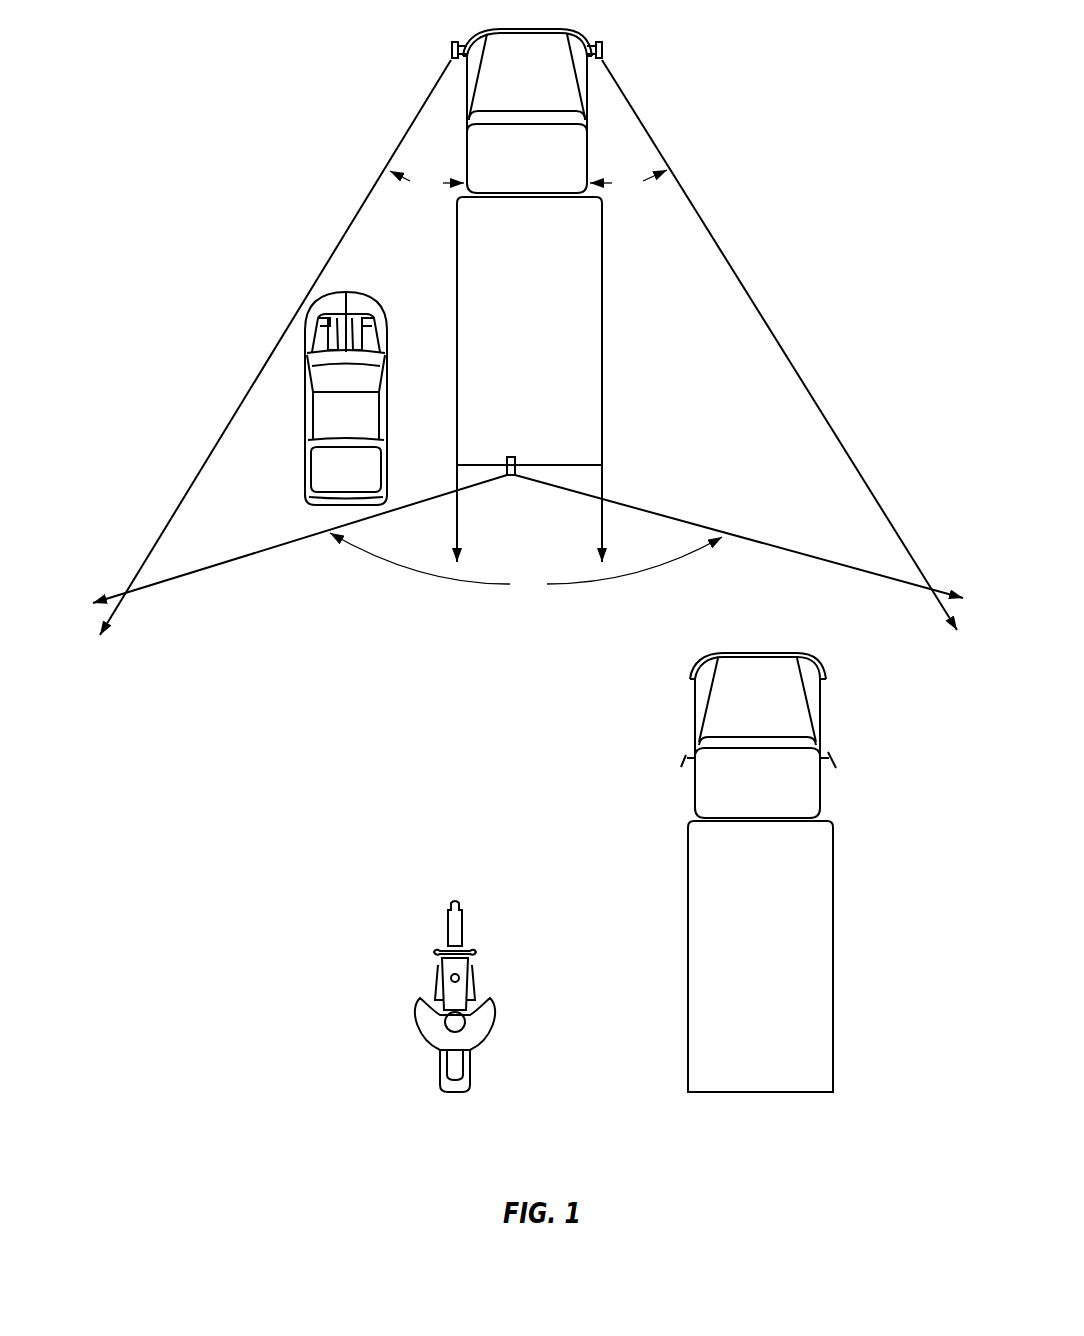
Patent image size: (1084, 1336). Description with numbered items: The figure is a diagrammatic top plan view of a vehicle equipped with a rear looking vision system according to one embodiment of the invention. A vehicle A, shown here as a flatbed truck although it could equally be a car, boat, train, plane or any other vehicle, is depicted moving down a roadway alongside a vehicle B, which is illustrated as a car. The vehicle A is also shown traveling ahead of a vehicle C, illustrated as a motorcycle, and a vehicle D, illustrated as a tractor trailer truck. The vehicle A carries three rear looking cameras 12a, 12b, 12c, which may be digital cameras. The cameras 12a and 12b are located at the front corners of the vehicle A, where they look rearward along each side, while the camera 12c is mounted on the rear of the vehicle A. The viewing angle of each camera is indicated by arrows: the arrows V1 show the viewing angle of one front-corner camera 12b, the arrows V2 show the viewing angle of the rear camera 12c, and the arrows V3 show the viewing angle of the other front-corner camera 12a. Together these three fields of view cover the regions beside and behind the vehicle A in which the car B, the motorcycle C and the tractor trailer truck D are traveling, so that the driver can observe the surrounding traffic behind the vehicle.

The rear looking camera 12a is at (601, 42).
The rear looking camera 12b is at (452, 42).
The rear looking camera 12c is at (514, 457).
The vehicle A is at (602, 316).
The vehicle B is at (393, 349).
The vehicle C is at (472, 932).
The vehicle D is at (685, 724).
The viewing angle arrow V1 is at (427, 185).
The viewing angle arrow V2 is at (526, 570).
The viewing angle arrow V3 is at (628, 185).